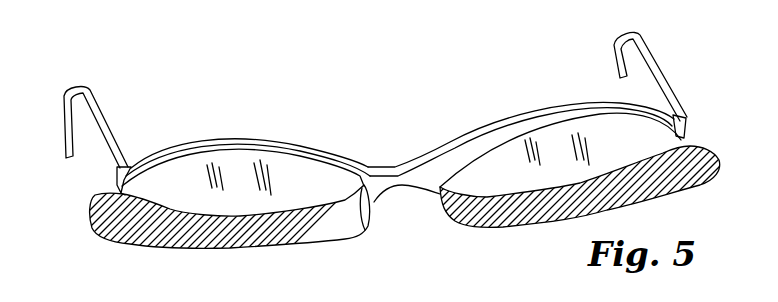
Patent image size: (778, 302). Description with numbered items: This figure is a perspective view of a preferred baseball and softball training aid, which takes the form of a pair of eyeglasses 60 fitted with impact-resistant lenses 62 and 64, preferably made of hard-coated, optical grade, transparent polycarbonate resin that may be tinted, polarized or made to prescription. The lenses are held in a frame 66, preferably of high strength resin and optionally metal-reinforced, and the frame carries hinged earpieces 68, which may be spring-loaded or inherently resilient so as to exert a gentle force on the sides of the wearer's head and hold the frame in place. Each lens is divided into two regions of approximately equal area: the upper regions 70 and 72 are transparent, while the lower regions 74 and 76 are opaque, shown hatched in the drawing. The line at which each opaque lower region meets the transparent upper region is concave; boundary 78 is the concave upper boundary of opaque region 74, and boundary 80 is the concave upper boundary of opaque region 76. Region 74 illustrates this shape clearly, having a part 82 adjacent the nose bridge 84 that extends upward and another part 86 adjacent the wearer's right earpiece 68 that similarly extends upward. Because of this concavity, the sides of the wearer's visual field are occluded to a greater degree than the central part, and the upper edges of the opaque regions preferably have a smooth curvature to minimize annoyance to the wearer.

The eyeglasses 60 is at (188, 252).
The lens 62 is at (272, 170).
The lens 64 is at (554, 152).
The frame 66 is at (322, 147).
The hinged earpieces 68 is at (112, 128).
The upper region 70 is at (233, 168).
The upper region 72 is at (480, 160).
The lower region 74 is at (260, 243).
The lower region 76 is at (477, 223).
The boundary 78 is at (285, 213).
The boundary 80 is at (597, 177).
The part 82 is at (363, 235).
The nose bridge 84 is at (400, 170).
The part 86 is at (124, 194).